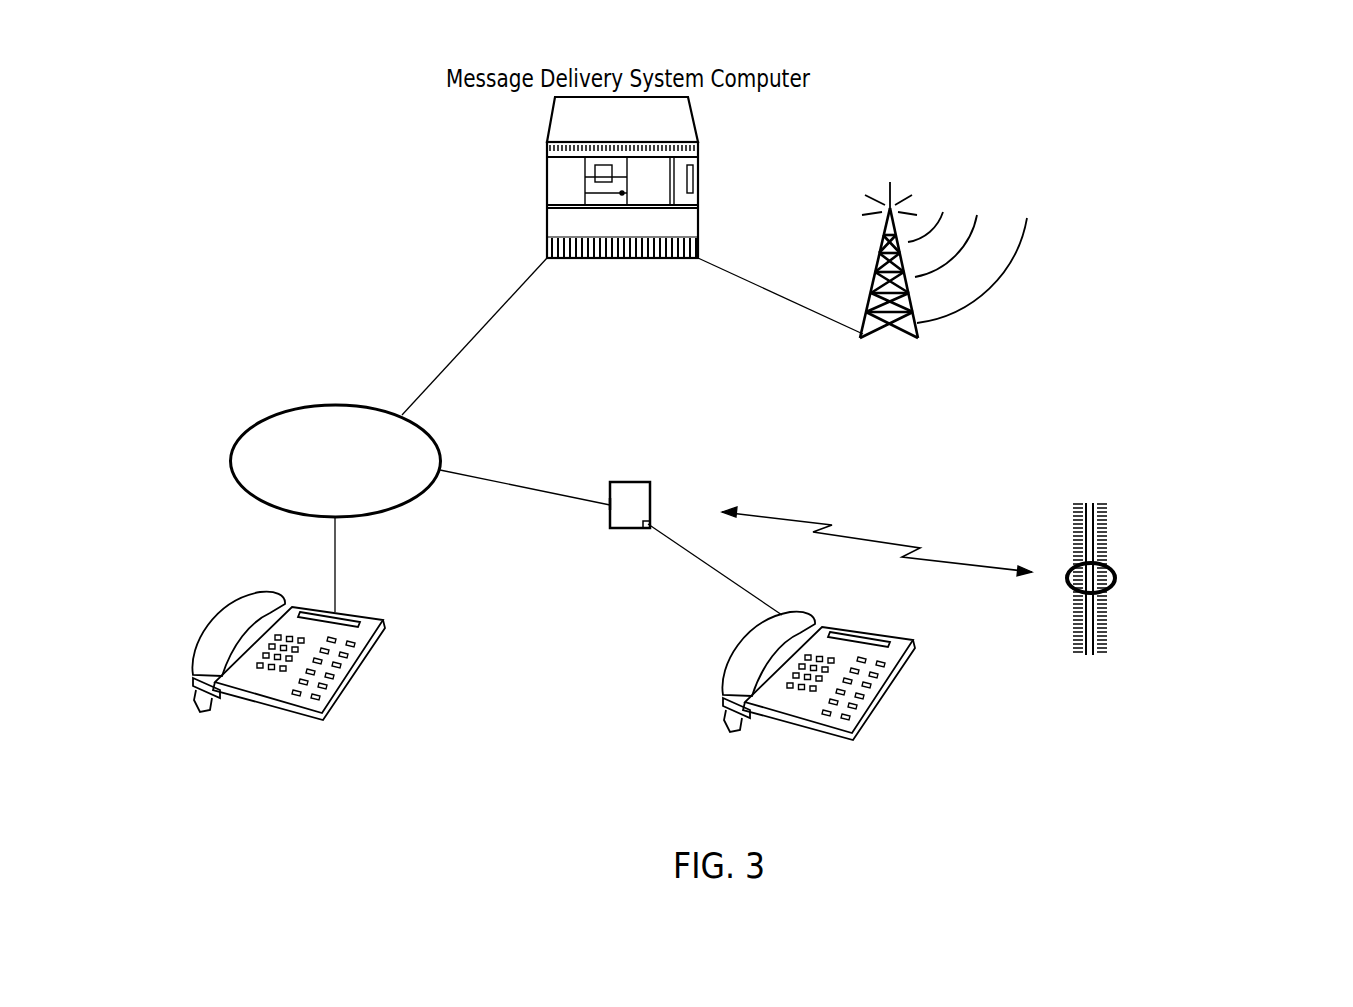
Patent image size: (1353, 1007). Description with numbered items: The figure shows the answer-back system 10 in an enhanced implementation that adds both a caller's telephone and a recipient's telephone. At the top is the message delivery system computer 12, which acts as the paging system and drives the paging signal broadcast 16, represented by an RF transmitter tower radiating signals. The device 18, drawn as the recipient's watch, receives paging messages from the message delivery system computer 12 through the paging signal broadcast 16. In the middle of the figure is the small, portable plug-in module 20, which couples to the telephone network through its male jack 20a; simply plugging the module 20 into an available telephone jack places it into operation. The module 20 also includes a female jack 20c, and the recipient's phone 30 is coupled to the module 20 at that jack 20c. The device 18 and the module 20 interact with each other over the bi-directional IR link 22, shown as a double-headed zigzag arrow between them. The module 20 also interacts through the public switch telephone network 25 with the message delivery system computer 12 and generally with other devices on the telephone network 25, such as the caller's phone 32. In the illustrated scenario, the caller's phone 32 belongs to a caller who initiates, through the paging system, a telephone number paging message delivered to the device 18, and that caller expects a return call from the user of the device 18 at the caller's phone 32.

The answer-back system 10 is at (1152, 117).
The message delivery system computer 12 is at (547, 181).
The paging signal broadcast 16 is at (1017, 261).
The device 18 is at (1107, 565).
The module 20 is at (610, 525).
The male RJ-11 jack 20a is at (609, 504).
The female RJ-11 jack 20c is at (642, 530).
The bi-directional IR link 22 is at (862, 537).
The public switch telephone network (PSTN) 25 is at (268, 417).
The recipient's phone 30 is at (907, 678).
The caller's phone 32 is at (365, 673).